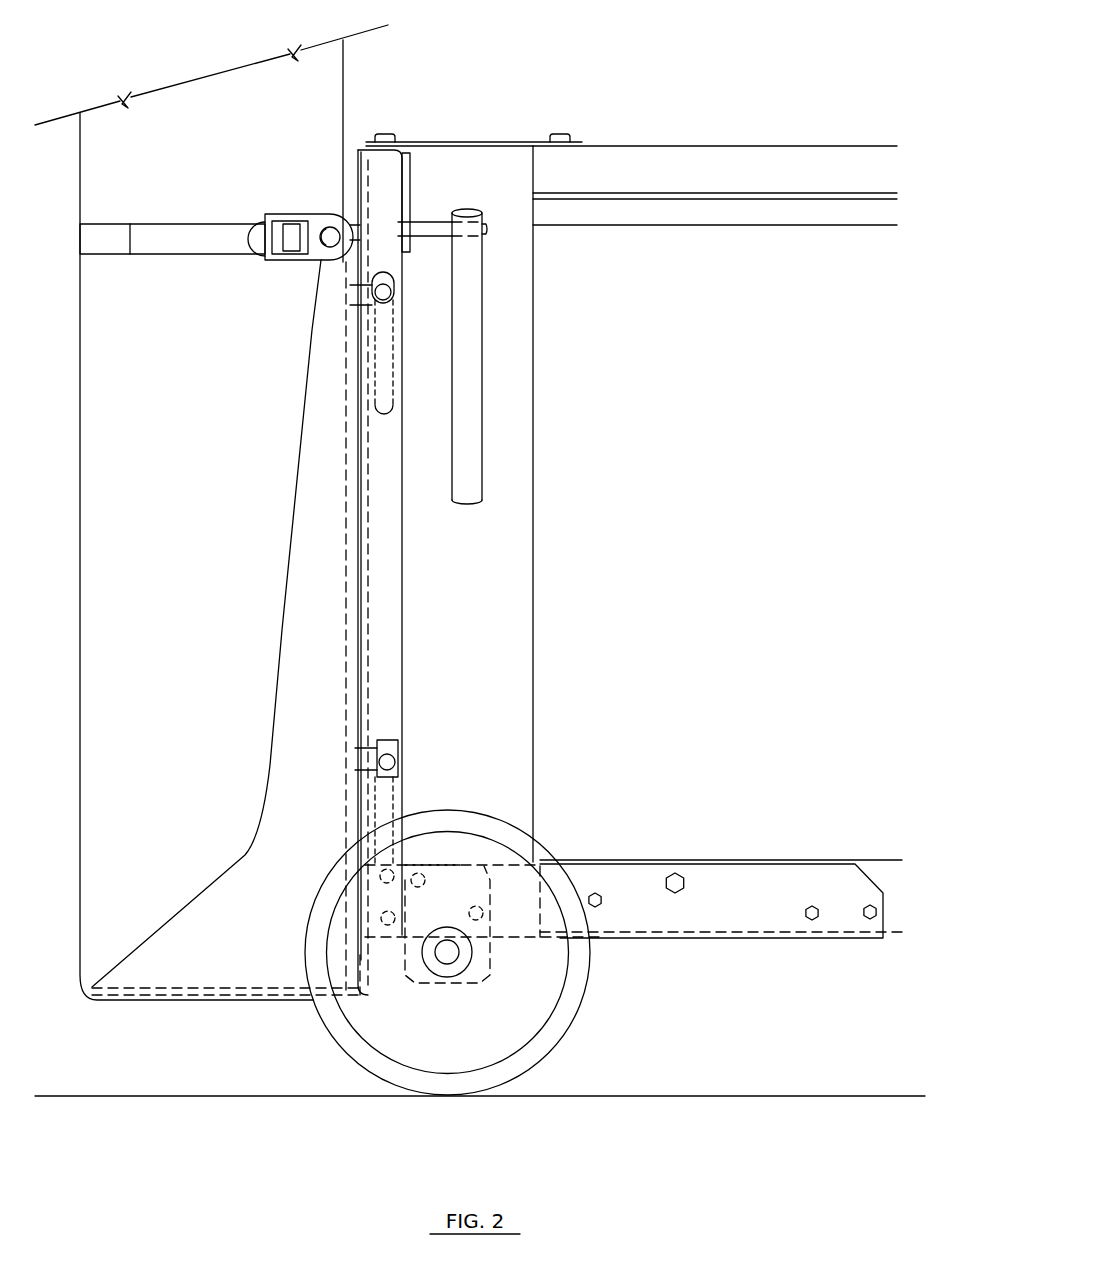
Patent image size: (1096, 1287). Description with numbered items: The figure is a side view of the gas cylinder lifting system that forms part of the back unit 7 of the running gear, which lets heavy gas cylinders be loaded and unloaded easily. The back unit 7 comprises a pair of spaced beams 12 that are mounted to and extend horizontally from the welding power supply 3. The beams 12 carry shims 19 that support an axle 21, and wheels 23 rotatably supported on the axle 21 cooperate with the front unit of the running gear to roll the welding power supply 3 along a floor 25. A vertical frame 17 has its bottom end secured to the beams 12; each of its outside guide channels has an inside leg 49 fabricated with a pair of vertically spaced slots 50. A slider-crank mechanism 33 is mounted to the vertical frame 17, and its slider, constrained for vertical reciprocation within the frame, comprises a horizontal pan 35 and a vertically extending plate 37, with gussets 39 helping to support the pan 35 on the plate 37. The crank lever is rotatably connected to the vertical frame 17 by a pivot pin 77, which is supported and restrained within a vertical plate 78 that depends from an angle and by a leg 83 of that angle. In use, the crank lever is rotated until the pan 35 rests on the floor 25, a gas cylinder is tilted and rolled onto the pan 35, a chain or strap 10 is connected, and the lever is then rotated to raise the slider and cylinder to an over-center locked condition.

The welding power supply 3 is at (704, 648).
The back unit 7 is at (721, 952).
The chain or strap 10 is at (95, 243).
The beams 12 is at (617, 920).
The vertical frame 17 is at (355, 572).
The shims 19 is at (470, 985).
The axle 21 is at (443, 955).
The wheels 23 is at (383, 1028).
The floor 25 is at (250, 1095).
The slider-crank mechanism 33 is at (305, 354).
The horizontal pan 35 is at (247, 990).
The vertically extending plate 37 is at (345, 505).
The gussets 39 is at (220, 556).
The inside leg 49 is at (400, 668).
The slots 50 is at (400, 375).
The pivot pin 77 is at (428, 230).
The vertical plate 78 is at (347, 265).
The leg 83 is at (403, 253).